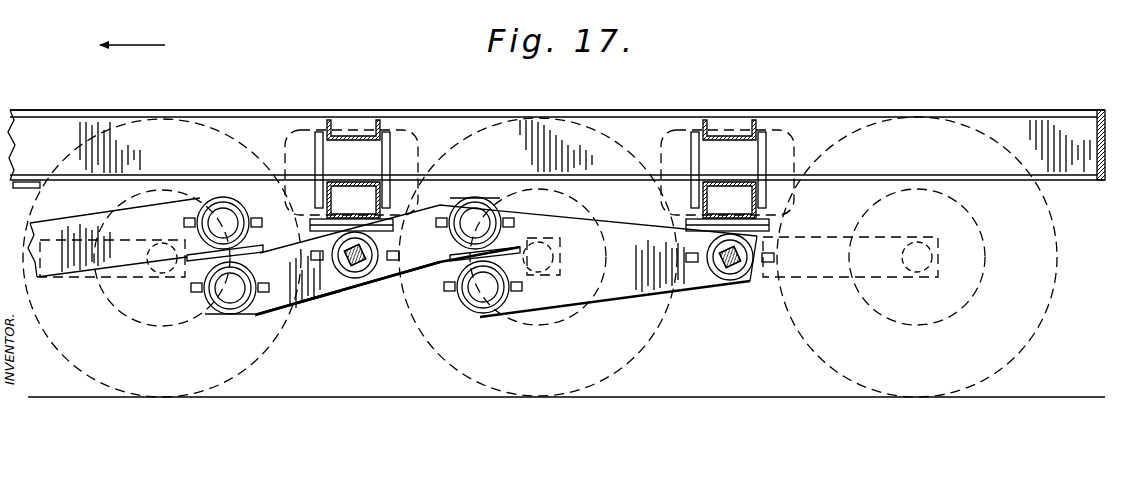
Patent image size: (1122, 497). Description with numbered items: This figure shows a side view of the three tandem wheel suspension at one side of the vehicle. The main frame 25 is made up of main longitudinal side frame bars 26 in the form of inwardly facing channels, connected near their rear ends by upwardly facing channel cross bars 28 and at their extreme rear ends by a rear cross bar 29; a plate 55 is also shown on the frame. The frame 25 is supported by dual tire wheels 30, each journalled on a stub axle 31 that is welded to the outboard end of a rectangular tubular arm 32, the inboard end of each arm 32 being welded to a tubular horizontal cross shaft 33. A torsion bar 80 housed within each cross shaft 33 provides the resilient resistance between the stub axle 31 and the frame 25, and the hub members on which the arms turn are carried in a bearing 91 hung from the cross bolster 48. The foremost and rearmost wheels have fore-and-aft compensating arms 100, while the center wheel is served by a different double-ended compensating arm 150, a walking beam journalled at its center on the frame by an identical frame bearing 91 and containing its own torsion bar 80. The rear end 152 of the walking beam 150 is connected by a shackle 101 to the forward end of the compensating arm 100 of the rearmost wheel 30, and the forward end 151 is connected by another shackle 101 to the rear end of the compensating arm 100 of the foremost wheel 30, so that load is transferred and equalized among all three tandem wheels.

The main frame 25 is at (958, 106).
The main longitudinal side frame bar 26 is at (56, 109).
The cross bar 28 is at (352, 133).
The rear cross bar 29 is at (1100, 111).
The dual tire wheel 30 is at (82, 378).
The stub axle 31 is at (158, 245).
The arm 32 is at (102, 295).
The cross shaft 33 is at (358, 285).
The cross bolster 48 is at (358, 187).
The plate 55 is at (22, 188).
The torsion bar 80 is at (352, 268).
The bearing 91 is at (335, 310).
The compensating arm 100 is at (157, 206).
The shackle 101 is at (197, 283).
The compensating arm 150 is at (317, 302).
The forward end 151 is at (253, 318).
The rear end 152 is at (468, 200).